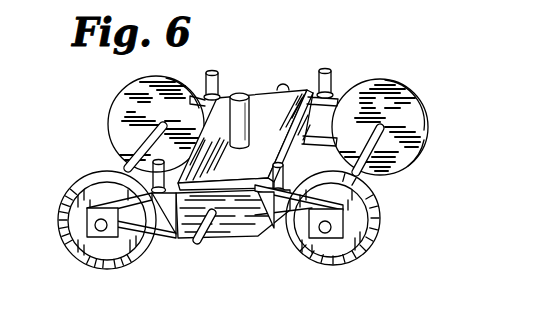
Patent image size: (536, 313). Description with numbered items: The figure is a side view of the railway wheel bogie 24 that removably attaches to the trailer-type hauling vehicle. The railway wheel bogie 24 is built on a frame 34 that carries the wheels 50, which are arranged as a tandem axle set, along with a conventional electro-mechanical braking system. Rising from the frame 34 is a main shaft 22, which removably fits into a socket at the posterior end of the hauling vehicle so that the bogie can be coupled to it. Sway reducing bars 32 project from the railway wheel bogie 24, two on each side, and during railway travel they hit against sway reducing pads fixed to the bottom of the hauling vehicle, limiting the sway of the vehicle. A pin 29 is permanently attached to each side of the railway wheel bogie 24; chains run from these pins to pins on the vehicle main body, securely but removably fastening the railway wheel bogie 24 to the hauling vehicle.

The main shaft 22 is at (246, 94).
The railway wheel bogie 24 is at (414, 98).
The pin 29 is at (205, 244).
The sway reducing bar 32 is at (212, 68).
The frame 34 is at (258, 137).
The wheel 50 is at (377, 243).